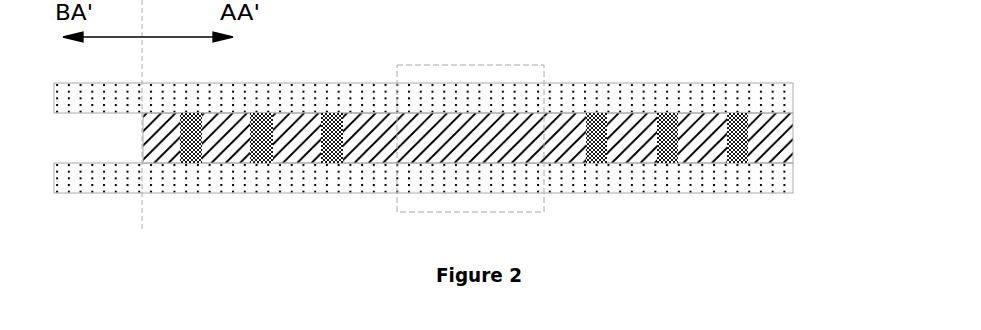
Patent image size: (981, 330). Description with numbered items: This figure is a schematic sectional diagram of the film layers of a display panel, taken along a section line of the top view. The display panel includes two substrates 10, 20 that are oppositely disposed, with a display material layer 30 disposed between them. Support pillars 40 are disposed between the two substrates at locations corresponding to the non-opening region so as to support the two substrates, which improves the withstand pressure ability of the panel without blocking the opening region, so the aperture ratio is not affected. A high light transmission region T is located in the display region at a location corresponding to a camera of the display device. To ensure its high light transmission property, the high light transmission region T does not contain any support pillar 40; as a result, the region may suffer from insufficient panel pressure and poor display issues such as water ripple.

The substrate 20 is at (793, 98).
The display material layer 30 is at (793, 138).
The substrate 10 is at (793, 178).
The support pillars 40 is at (333, 112).
The high light transmission region T is at (466, 65).